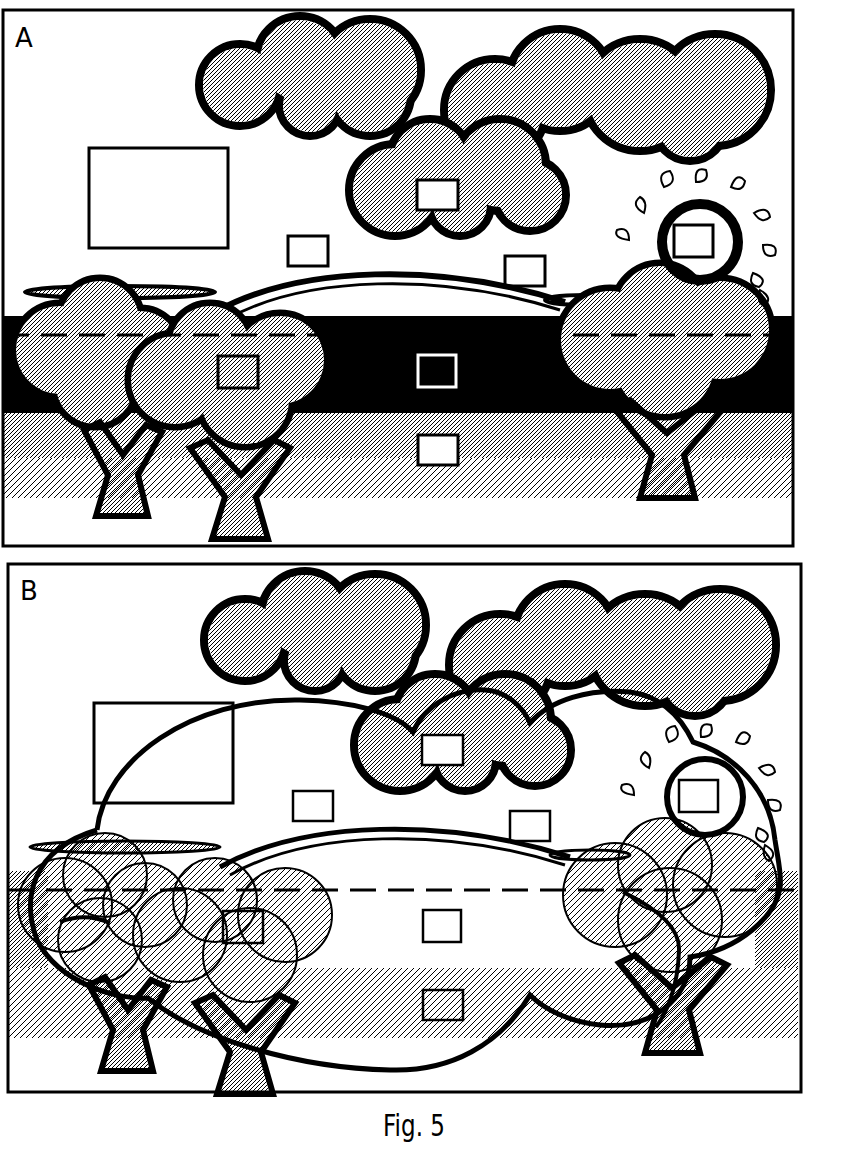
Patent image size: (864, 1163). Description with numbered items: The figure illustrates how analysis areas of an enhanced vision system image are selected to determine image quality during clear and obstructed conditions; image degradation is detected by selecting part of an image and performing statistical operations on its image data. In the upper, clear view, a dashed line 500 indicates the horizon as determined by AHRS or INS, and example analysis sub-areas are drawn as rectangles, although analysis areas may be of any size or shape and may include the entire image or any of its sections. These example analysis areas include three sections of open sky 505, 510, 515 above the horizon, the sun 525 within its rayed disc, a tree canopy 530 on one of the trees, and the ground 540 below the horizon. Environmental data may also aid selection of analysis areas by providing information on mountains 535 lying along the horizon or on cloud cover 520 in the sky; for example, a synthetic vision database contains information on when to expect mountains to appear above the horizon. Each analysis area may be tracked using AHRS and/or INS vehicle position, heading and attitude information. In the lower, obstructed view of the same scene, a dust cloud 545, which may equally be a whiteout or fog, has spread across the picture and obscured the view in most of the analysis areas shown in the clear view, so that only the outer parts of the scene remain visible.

In FIG. 5A, the dashed line 500 is at (118, 342).
In FIG. 5A, the section of open sky 505 is at (155, 148).
In FIG. 5A, the section of open sky 510 is at (310, 237).
In FIG. 5A, the section of open sky 515 is at (505, 270).
In FIG. 5A, the cloud cover 520 is at (412, 193).
In FIG. 5A, the sun 525 is at (673, 240).
In FIG. 5A, the tree canopy 530 is at (238, 390).
In FIG. 5A, the mountains 535 is at (418, 370).
In FIG. 5A, the ground 540 is at (416, 448).
In FIG. 5B, the dust cloud 545 is at (312, 760).